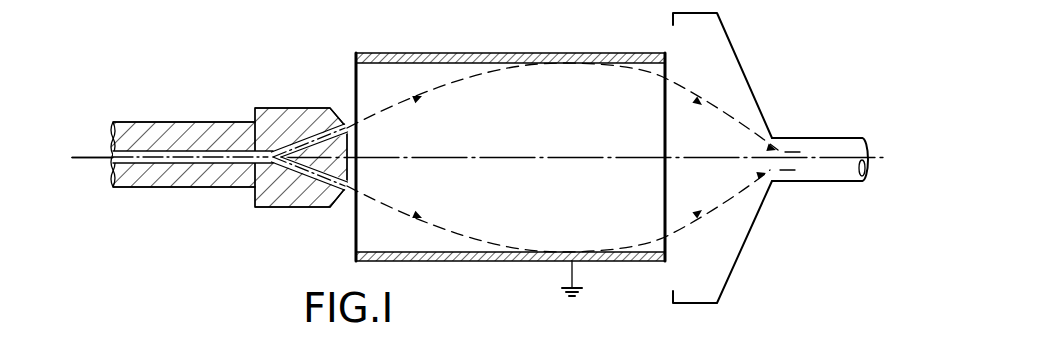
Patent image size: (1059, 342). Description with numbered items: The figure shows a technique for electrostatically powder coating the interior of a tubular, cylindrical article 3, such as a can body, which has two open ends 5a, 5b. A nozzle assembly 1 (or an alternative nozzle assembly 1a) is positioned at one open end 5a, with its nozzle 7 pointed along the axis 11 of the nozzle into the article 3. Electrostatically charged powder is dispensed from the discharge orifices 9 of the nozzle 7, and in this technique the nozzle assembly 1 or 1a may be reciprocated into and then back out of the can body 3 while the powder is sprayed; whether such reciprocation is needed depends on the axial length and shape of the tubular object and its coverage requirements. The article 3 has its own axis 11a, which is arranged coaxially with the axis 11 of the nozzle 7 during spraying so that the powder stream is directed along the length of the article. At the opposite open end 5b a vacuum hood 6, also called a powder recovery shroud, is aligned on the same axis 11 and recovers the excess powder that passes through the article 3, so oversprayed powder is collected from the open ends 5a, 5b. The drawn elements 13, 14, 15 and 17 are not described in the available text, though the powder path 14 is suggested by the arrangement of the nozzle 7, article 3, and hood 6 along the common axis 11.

The nozzle assembly 1 is at (256, 129).
The nozzle assembly 1a is at (162, 185).
The nozzle 7 is at (312, 108).
The central bore 13 is at (200, 142).
The discharge orifices 9 is at (352, 184).
The axis 11 is at (90, 150).
The axis 11a is at (513, 156).
The tubular, cylindrical article 3 is at (499, 144).
The open end 5a is at (353, 230).
The open end 5b is at (668, 243).
The fluid stream 14 is at (461, 80).
The ground connection 15 is at (565, 298).
The vacuum hood 6 is at (741, 51).
The outlet tube 17 is at (862, 138).